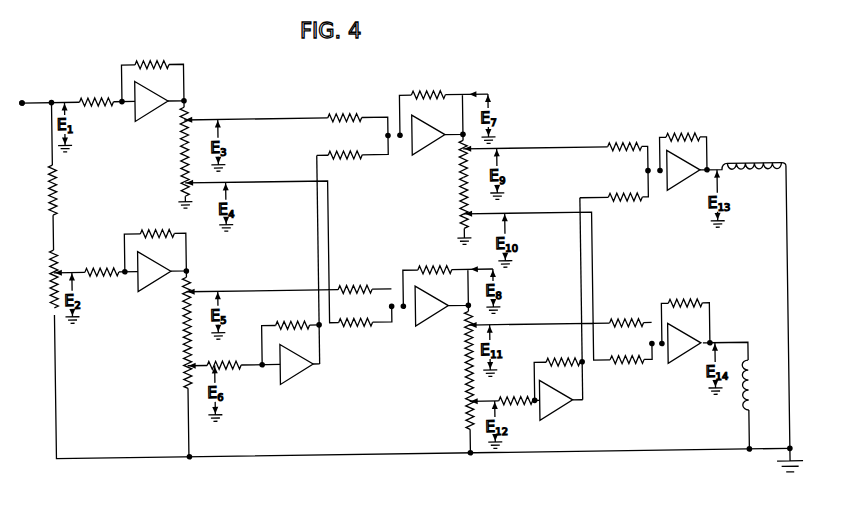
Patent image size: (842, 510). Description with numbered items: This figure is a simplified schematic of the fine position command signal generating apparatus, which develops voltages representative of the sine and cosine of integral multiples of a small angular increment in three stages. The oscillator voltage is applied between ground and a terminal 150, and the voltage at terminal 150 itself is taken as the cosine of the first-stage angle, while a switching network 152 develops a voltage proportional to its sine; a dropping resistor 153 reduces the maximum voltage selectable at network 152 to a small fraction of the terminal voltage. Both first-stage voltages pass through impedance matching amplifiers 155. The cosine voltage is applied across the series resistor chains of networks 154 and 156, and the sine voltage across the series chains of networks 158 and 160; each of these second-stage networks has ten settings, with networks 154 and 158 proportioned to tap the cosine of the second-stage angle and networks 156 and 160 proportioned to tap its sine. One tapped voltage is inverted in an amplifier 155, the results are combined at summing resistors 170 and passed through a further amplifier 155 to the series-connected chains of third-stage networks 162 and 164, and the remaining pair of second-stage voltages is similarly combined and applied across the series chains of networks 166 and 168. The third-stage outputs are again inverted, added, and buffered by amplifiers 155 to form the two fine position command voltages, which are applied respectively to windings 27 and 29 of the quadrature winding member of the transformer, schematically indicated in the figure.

The terminal 150 is at (25, 96).
The switching network 152 is at (53, 280).
The dropping resistor 153 is at (58, 182).
The switching network 154 is at (180, 115).
The impedance matching amplifier 155 is at (138, 104).
The switching network 156 is at (180, 162).
The switching network 158 is at (180, 294).
The switching network 160 is at (179, 356).
The switching network 162 is at (452, 162).
The switching network 164 is at (459, 212).
The switching network 166 is at (461, 329).
The switching network 168 is at (460, 392).
The summing resistor 170 is at (340, 109).
The winding 29 is at (735, 177).
The winding 27 is at (754, 388).